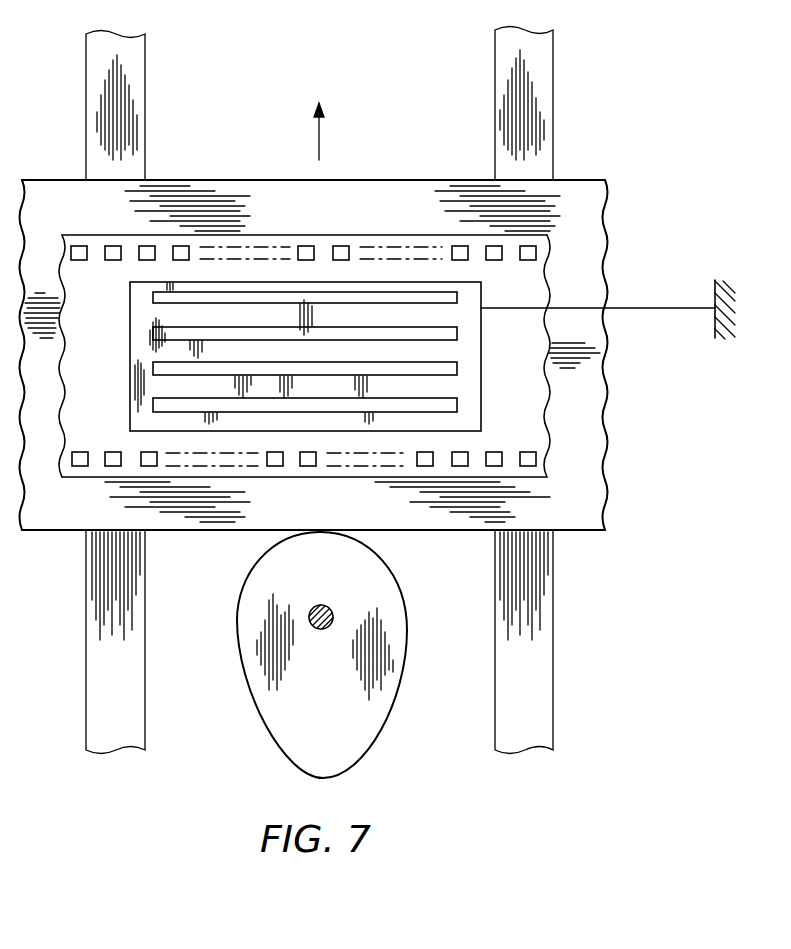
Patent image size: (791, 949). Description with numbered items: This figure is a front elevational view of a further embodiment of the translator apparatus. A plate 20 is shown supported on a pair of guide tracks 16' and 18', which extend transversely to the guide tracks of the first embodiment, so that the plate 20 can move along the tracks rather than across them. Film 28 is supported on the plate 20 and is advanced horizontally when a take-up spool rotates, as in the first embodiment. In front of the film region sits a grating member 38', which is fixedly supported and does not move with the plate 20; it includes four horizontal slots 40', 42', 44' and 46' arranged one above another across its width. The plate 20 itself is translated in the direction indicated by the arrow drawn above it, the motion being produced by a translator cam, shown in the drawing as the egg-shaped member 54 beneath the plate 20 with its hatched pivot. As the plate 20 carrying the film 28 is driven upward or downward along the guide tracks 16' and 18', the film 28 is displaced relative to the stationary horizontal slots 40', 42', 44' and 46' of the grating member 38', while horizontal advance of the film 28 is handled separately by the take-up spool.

The guide track 16' is at (159, 392).
The guide track 18' is at (572, 390).
The plate 20 is at (391, 190).
The film 28 is at (322, 473).
The grating member 38' is at (275, 356).
The horizontal slot 40' is at (305, 263).
The horizontal slot 42' is at (347, 334).
The horizontal slot 44' is at (347, 371).
The horizontal slot 46' is at (347, 405).
The cam 54 is at (252, 627).